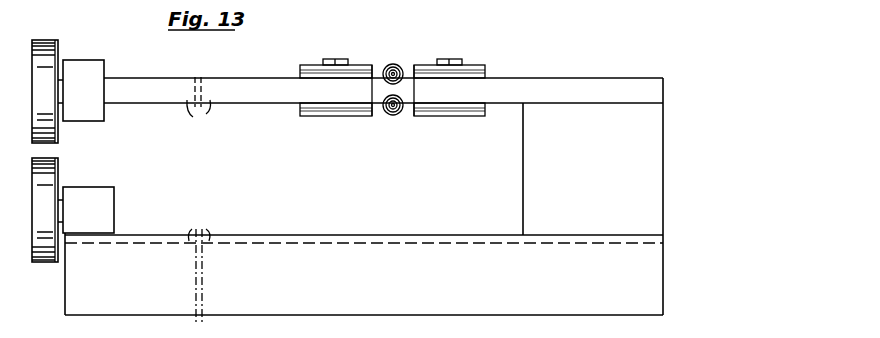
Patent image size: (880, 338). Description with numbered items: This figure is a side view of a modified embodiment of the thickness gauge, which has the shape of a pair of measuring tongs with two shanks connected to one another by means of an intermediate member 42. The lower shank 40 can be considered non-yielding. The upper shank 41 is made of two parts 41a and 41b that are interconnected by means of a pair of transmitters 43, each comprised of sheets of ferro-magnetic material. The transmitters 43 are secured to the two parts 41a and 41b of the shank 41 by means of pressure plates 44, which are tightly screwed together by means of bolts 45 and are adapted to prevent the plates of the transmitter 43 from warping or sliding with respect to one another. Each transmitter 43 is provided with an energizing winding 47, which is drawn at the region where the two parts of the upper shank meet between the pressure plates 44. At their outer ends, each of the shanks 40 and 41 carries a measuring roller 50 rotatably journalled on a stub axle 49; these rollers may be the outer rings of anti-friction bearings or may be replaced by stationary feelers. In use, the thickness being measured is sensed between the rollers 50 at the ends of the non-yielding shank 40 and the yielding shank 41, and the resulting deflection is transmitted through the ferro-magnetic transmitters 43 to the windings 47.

The shank 40 is at (200, 266).
The shank 41 is at (233, 73).
The part of shank 41a is at (611, 82).
The part of shank 41b is at (205, 106).
The intermediate member 42 is at (596, 171).
The transmitter 43 is at (407, 65).
The pressure plates 44 is at (300, 70).
The bolts 45 is at (335, 59).
The energizing winding 47 is at (392, 64).
The stub axle 49 is at (67, 96).
The measuring roller 50 is at (59, 138).